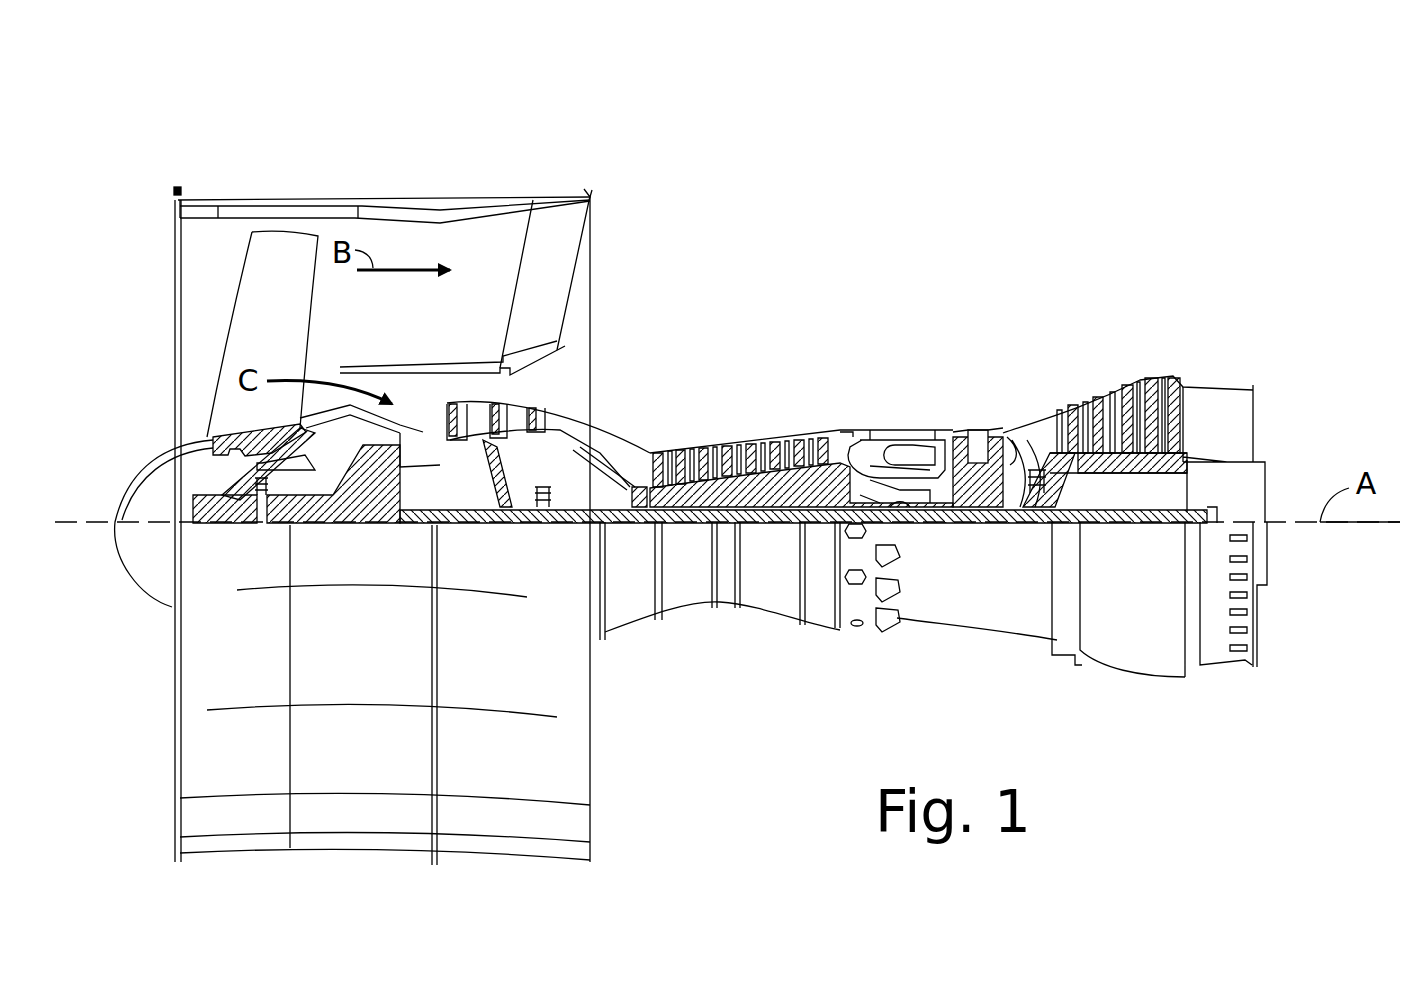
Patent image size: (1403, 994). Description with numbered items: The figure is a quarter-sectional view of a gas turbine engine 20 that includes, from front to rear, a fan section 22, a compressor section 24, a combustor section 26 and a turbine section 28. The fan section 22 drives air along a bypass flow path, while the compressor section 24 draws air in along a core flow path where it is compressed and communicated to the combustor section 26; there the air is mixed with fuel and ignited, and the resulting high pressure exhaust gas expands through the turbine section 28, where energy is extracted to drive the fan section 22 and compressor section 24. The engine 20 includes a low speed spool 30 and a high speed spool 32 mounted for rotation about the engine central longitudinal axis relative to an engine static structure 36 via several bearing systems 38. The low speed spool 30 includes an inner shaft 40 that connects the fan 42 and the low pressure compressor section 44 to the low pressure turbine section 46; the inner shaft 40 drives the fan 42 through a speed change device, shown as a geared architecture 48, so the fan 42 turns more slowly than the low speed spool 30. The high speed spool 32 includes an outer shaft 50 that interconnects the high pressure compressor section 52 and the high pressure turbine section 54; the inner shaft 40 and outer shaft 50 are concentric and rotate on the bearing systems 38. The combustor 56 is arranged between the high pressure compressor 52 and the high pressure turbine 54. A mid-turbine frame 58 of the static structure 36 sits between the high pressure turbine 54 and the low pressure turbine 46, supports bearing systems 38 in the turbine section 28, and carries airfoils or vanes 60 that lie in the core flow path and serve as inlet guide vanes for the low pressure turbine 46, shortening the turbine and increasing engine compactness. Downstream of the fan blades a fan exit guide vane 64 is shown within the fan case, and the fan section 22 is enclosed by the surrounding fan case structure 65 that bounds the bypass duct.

The gas turbine engine 20 is at (1088, 199).
The fan section 22 is at (592, 133).
The compressor section 24 is at (877, 310).
The combustor section 26 is at (954, 310).
The turbine section 28 is at (1210, 310).
The low speed spool 30 is at (765, 535).
The high speed spool 32 is at (800, 486).
The engine static structure 36 is at (820, 633).
The bearing systems 38 is at (262, 500).
The inner shaft 40 is at (612, 525).
The fan 42 is at (252, 320).
The low pressure compressor section 44 is at (522, 405).
The low pressure turbine section 46 is at (1124, 397).
The geared architecture 48 is at (386, 500).
The outer shaft 50 is at (903, 495).
The high pressure compressor section 52 is at (730, 446).
The high pressure turbine section 54 is at (981, 422).
The combustor 56 is at (893, 458).
The mid-turbine frame 58 is at (1026, 427).
The airfoils/vanes 60 is at (1022, 445).
The fan exit guide vane 64 is at (532, 272).
The nacelle 65 is at (430, 198).